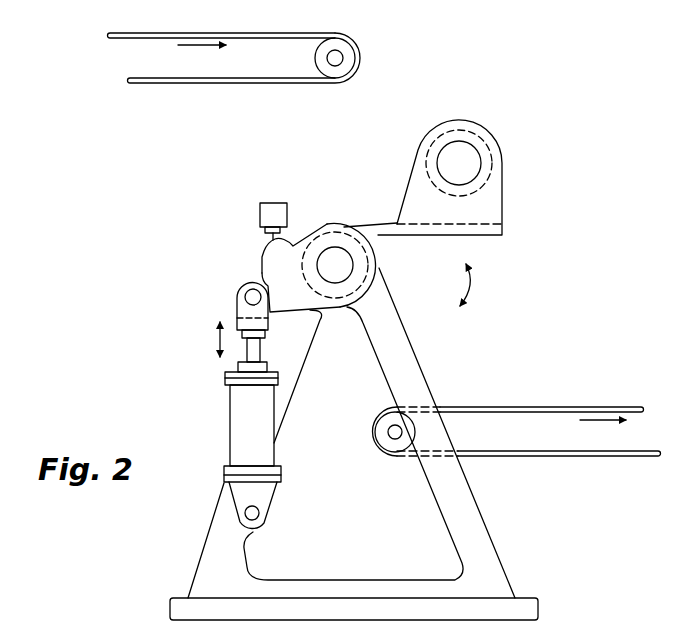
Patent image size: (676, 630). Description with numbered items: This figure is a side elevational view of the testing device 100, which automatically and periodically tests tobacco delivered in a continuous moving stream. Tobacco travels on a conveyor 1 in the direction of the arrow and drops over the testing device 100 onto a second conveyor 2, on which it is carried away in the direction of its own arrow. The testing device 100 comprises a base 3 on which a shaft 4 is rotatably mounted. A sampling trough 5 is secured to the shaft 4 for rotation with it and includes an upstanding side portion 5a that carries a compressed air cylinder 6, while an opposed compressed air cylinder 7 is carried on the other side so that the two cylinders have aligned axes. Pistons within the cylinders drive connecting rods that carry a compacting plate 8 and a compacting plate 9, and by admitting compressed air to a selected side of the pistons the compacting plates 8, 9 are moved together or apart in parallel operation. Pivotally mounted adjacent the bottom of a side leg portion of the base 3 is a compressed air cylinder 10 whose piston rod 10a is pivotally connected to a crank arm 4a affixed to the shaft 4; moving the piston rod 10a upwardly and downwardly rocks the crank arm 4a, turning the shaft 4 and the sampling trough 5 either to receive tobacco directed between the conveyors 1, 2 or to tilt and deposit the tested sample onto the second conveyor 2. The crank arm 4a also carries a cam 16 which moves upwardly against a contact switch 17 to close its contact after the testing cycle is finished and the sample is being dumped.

The conveyor 1 is at (354, 70).
The second conveyor 2 is at (538, 404).
The base 3 is at (415, 378).
The shaft 4 is at (282, 293).
The crank arm 4a is at (257, 262).
The sampling trough 5 is at (463, 182).
The upstanding side portion 5a is at (412, 193).
The compressed air cylinder 6 is at (509, 143).
The compressed air cylinder 7 is at (472, 158).
The compacting plate 8 is at (499, 171).
The compacting plate 9 is at (485, 183).
The compressed air cylinder 10 is at (237, 406).
The piston rod 10a is at (262, 312).
The cam 16 is at (272, 252).
The contact switch 17 is at (262, 212).
The testing device 100 is at (494, 532).